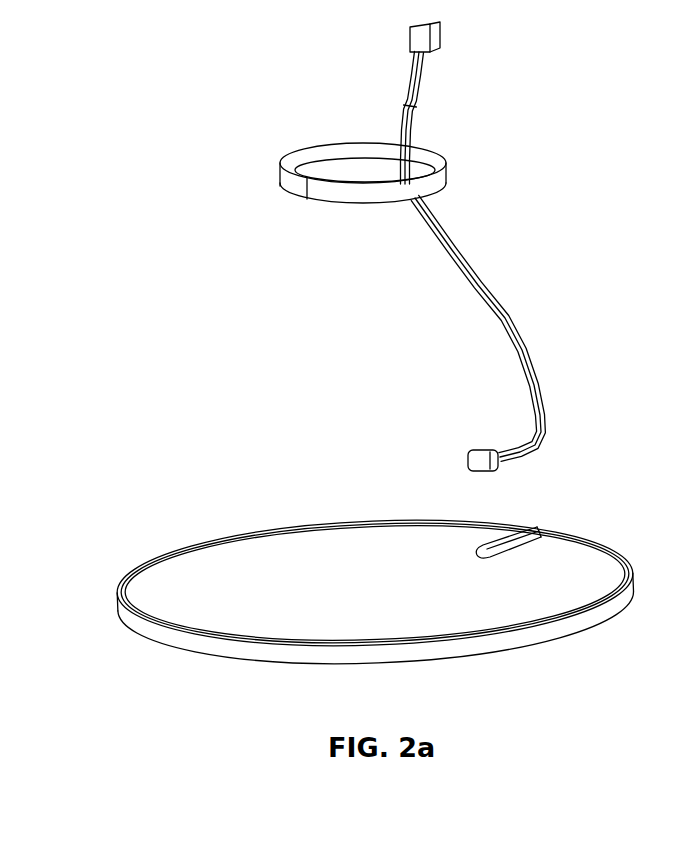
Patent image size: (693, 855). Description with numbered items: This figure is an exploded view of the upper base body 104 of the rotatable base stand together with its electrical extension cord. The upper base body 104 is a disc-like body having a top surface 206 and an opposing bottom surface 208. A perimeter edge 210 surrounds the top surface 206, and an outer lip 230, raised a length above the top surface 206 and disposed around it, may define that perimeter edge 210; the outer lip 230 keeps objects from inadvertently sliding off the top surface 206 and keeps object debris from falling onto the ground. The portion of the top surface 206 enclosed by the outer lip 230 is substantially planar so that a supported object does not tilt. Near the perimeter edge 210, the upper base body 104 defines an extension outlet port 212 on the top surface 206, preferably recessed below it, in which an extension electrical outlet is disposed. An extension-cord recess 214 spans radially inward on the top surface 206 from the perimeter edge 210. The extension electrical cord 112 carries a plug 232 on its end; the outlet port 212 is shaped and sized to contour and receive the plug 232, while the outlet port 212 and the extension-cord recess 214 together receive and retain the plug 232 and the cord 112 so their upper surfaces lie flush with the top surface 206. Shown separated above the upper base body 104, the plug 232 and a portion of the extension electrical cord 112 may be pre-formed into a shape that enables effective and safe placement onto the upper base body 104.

The upper base body 104 is at (313, 526).
The extension electrical cord 112 is at (505, 320).
The top surface 206 is at (297, 567).
The bottom surface 208 is at (569, 651).
The perimeter edge 210 is at (612, 532).
The extension outlet port 212 is at (472, 540).
The extension-cord recess 214 is at (542, 519).
The outer lip 230 is at (119, 583).
The plug 232 is at (480, 455).